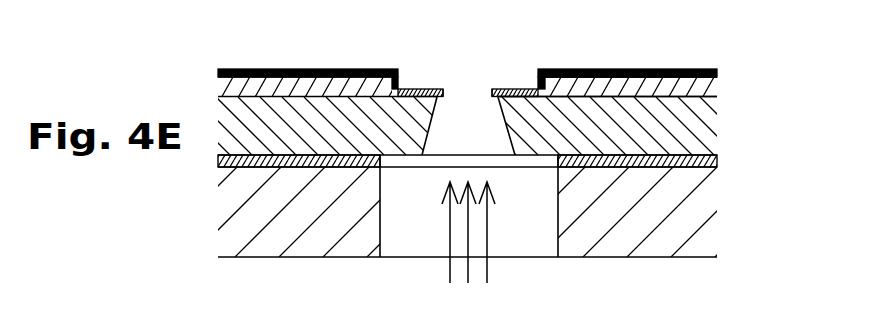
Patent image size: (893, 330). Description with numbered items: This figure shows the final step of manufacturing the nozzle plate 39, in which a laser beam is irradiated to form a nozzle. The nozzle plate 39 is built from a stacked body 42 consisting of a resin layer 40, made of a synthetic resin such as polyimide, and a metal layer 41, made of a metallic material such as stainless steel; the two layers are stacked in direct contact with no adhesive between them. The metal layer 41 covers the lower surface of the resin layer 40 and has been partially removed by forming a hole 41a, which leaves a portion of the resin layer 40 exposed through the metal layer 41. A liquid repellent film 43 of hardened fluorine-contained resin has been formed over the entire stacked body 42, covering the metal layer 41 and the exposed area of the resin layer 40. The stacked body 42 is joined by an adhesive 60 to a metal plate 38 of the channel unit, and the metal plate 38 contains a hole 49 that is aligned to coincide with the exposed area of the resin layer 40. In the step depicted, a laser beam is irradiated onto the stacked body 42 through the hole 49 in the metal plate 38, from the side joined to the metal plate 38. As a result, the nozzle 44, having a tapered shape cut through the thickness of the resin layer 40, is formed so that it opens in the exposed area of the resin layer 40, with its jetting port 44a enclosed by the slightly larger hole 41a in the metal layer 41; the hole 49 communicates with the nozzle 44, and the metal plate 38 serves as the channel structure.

The metal plate 38 is at (695, 215).
The nozzle plate 39 is at (791, 69).
The resin layer 40 is at (697, 123).
The metal layer 41 is at (699, 95).
The hole 41a is at (537, 82).
The stacked body 42 is at (699, 117).
The liquid repellent film 43 is at (413, 90).
The nozzle 44 is at (497, 130).
The jetting port 44a is at (458, 95).
The hole 49 is at (380, 227).
The adhesive 60 is at (715, 157).